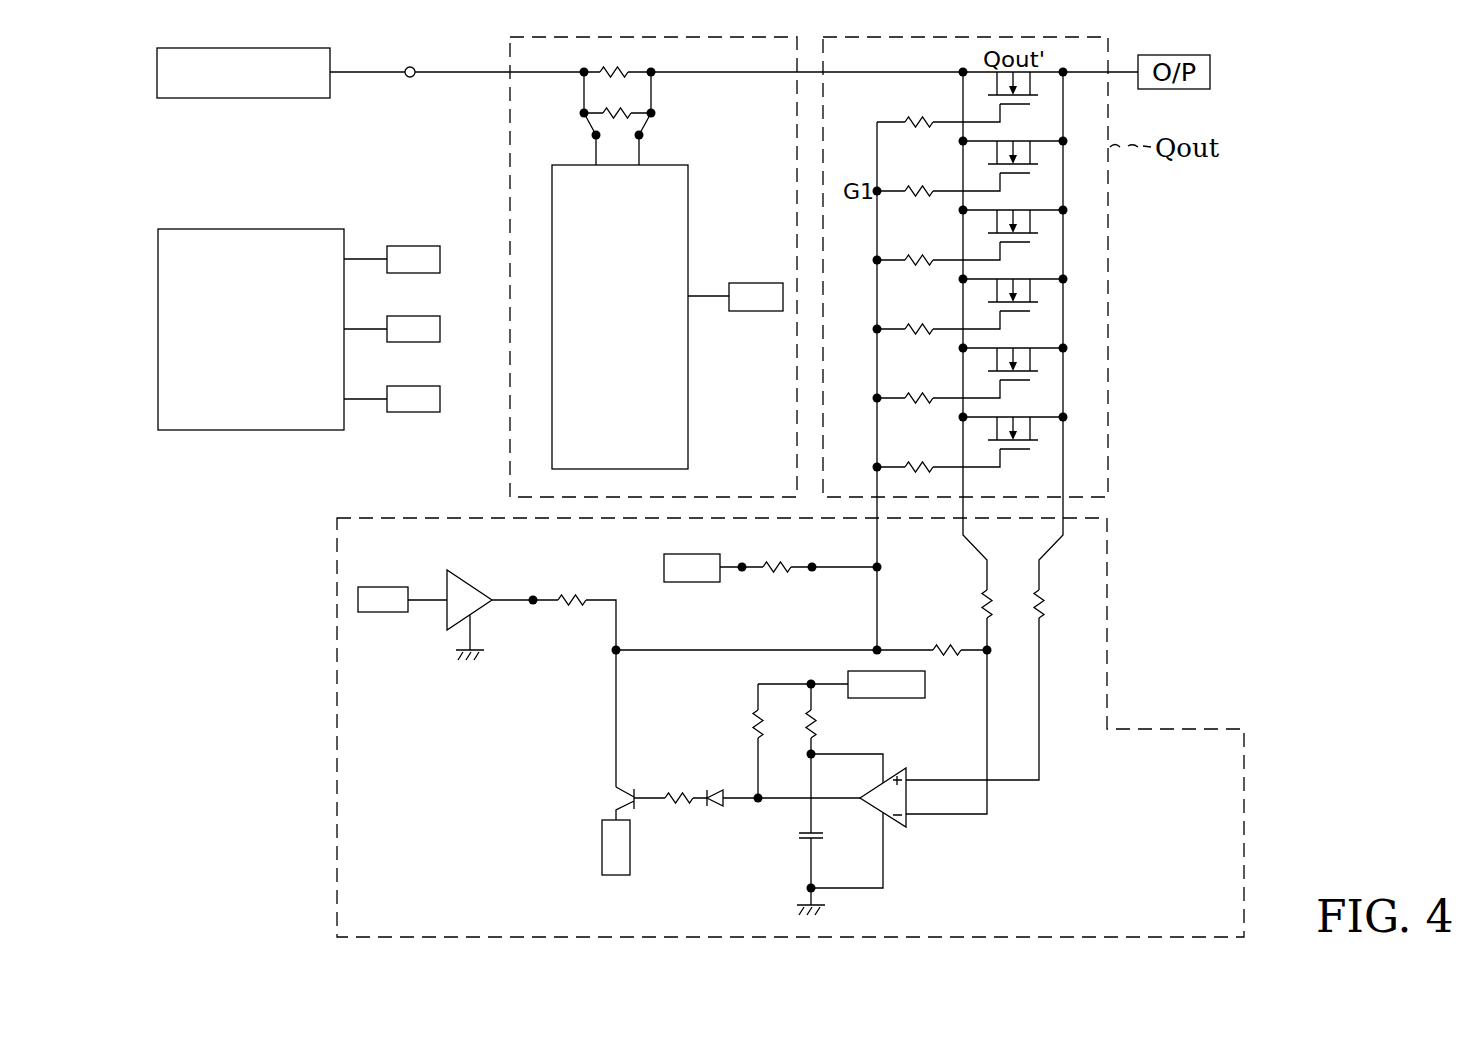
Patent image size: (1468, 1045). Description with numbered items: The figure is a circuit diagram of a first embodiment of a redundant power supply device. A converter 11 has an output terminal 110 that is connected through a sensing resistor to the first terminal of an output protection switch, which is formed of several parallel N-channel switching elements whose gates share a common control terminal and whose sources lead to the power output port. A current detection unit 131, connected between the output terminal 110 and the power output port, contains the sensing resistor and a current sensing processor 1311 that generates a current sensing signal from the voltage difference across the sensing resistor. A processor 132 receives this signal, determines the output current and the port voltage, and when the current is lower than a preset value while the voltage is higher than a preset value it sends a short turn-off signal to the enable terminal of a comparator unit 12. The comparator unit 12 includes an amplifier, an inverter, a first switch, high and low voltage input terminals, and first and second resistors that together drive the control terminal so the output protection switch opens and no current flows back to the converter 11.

The converter 11 is at (157, 72).
The output terminal 110 is at (415, 59).
The current detection unit 131 is at (510, 147).
The current sensing processor 1311 is at (688, 375).
The processor 132 is at (158, 327).
The comparator unit 12 is at (337, 641).